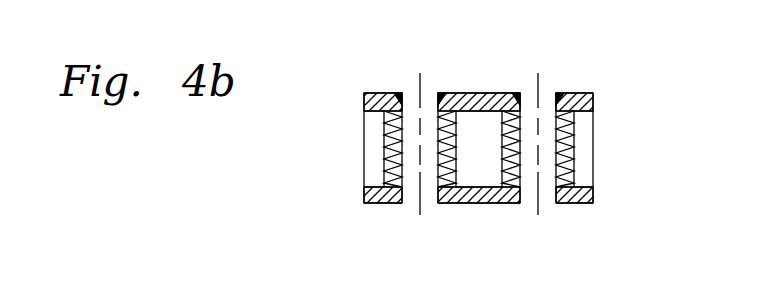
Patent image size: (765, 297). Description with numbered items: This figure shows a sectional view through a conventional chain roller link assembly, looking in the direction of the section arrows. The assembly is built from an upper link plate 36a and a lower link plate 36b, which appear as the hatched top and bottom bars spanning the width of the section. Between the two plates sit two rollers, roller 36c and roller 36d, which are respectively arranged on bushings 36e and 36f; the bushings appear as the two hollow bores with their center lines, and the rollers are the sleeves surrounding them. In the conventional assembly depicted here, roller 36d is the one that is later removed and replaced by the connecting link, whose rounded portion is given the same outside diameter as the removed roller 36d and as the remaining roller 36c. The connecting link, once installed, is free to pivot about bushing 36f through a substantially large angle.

The upper link plate 36a is at (578, 93).
The lower link plate 36b is at (580, 203).
The roller 36c is at (386, 137).
The roller 36d is at (576, 137).
The bushing 36e is at (430, 97).
The bushing 36f is at (548, 96).